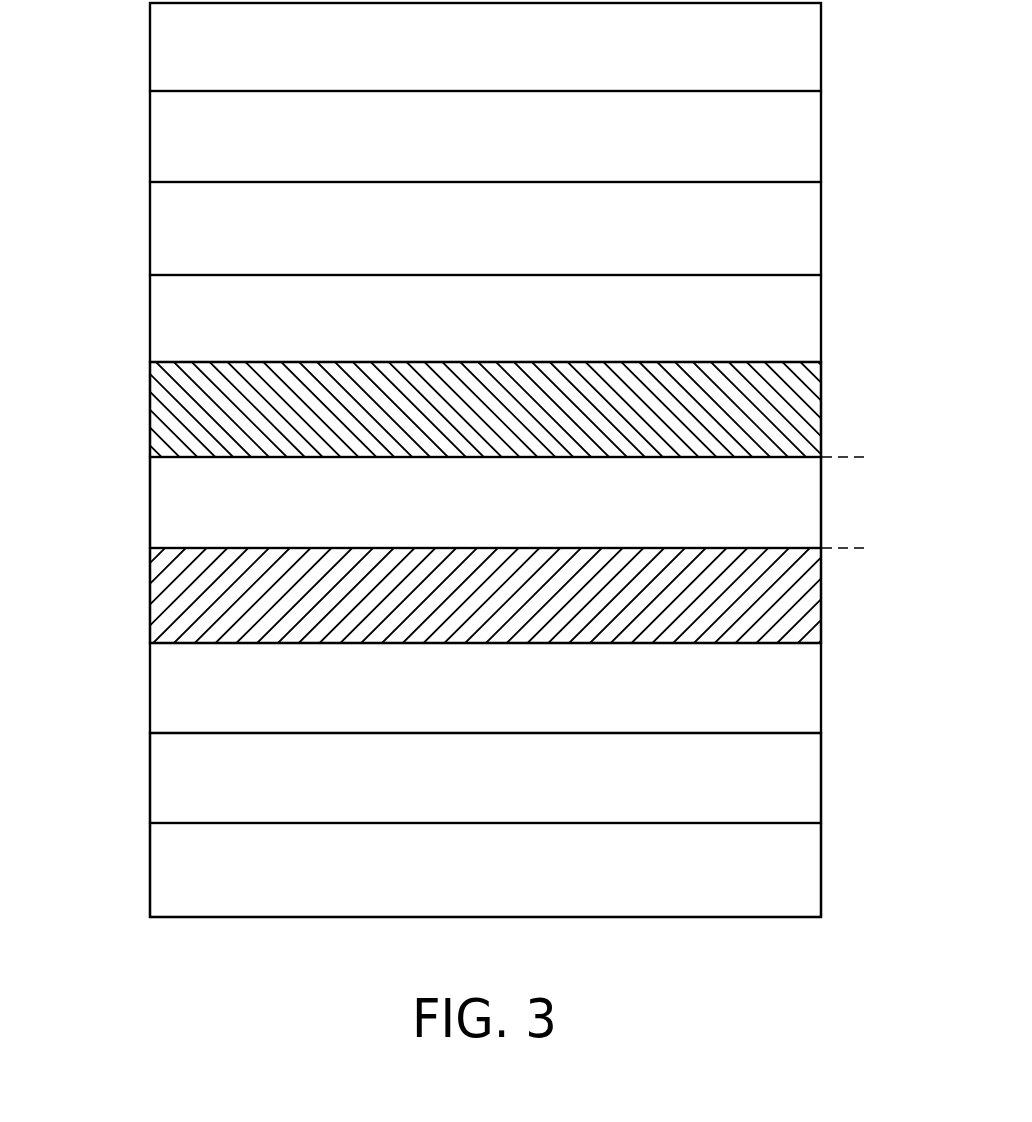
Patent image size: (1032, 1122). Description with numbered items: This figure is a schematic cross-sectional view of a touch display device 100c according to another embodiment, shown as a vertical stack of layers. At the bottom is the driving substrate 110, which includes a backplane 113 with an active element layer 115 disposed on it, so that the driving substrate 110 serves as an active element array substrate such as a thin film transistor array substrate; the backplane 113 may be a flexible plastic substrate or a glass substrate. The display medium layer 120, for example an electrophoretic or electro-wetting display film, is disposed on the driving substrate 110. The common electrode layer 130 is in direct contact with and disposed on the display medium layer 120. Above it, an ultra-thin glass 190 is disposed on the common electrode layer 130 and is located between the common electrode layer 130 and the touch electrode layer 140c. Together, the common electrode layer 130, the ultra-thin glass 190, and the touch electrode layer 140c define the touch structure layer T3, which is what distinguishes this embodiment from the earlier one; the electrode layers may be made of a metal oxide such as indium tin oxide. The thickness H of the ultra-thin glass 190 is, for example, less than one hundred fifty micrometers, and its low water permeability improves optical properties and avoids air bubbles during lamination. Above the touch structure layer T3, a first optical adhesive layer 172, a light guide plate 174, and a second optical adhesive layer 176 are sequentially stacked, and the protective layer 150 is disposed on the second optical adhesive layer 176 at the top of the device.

The touch display device 100c is at (931, 961).
The protective layer 150 is at (158, 45).
The second optical adhesive layer 176 is at (158, 132).
The light guide plate 174 is at (158, 228).
The first optical adhesive layer 172 is at (158, 312).
The touch electrode layer 140c is at (158, 401).
The ultra-thin glass 190 is at (158, 503).
The common electrode layer 130 is at (158, 598).
The display medium layer 120 is at (158, 695).
The active element layer 115 is at (158, 781).
The backplane 113 is at (158, 872).
The driving substrate 110 is at (73, 763).
The touch structure layer T3 is at (73, 380).
The thickness H is at (867, 458).